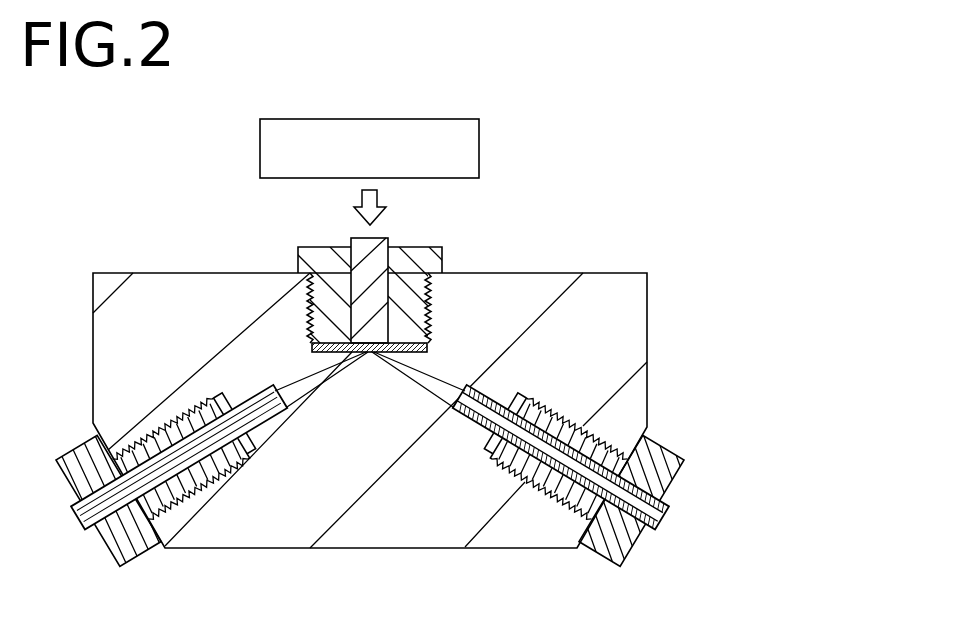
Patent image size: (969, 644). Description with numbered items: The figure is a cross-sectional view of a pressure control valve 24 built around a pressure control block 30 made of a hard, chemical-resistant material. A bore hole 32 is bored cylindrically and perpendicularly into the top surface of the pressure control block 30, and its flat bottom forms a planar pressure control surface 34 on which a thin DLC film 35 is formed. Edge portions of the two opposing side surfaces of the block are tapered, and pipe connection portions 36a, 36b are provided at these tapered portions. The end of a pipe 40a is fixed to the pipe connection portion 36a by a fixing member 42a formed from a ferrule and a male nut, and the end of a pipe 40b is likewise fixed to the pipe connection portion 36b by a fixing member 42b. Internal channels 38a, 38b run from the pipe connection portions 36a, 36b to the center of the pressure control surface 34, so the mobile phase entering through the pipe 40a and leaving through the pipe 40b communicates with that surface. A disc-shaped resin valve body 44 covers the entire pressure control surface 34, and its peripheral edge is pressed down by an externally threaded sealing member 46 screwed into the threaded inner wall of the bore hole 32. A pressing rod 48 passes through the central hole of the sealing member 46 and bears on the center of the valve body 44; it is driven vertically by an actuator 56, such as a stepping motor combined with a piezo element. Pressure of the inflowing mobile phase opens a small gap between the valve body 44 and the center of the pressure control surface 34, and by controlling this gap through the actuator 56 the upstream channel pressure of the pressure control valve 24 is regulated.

The pressure control valve 24 is at (614, 237).
The pressure control block 30 is at (622, 326).
The bore hole 32 is at (428, 304).
The pressure control surface 34 is at (317, 353).
The DLC film 35 is at (310, 275).
The pipe connection portion 36a is at (487, 448).
The pipe connection portion 36b is at (253, 448).
The internal channel 38a is at (418, 380).
The internal channel 38b is at (307, 378).
The pipe 40a is at (640, 496).
The pipe 40b is at (113, 498).
The fixing member 42a is at (655, 458).
The fixing member 42b is at (138, 540).
The valve body 44 is at (347, 342).
The sealing member 46 is at (442, 247).
The pressing rod 48 is at (388, 240).
The actuator 56 is at (483, 133).